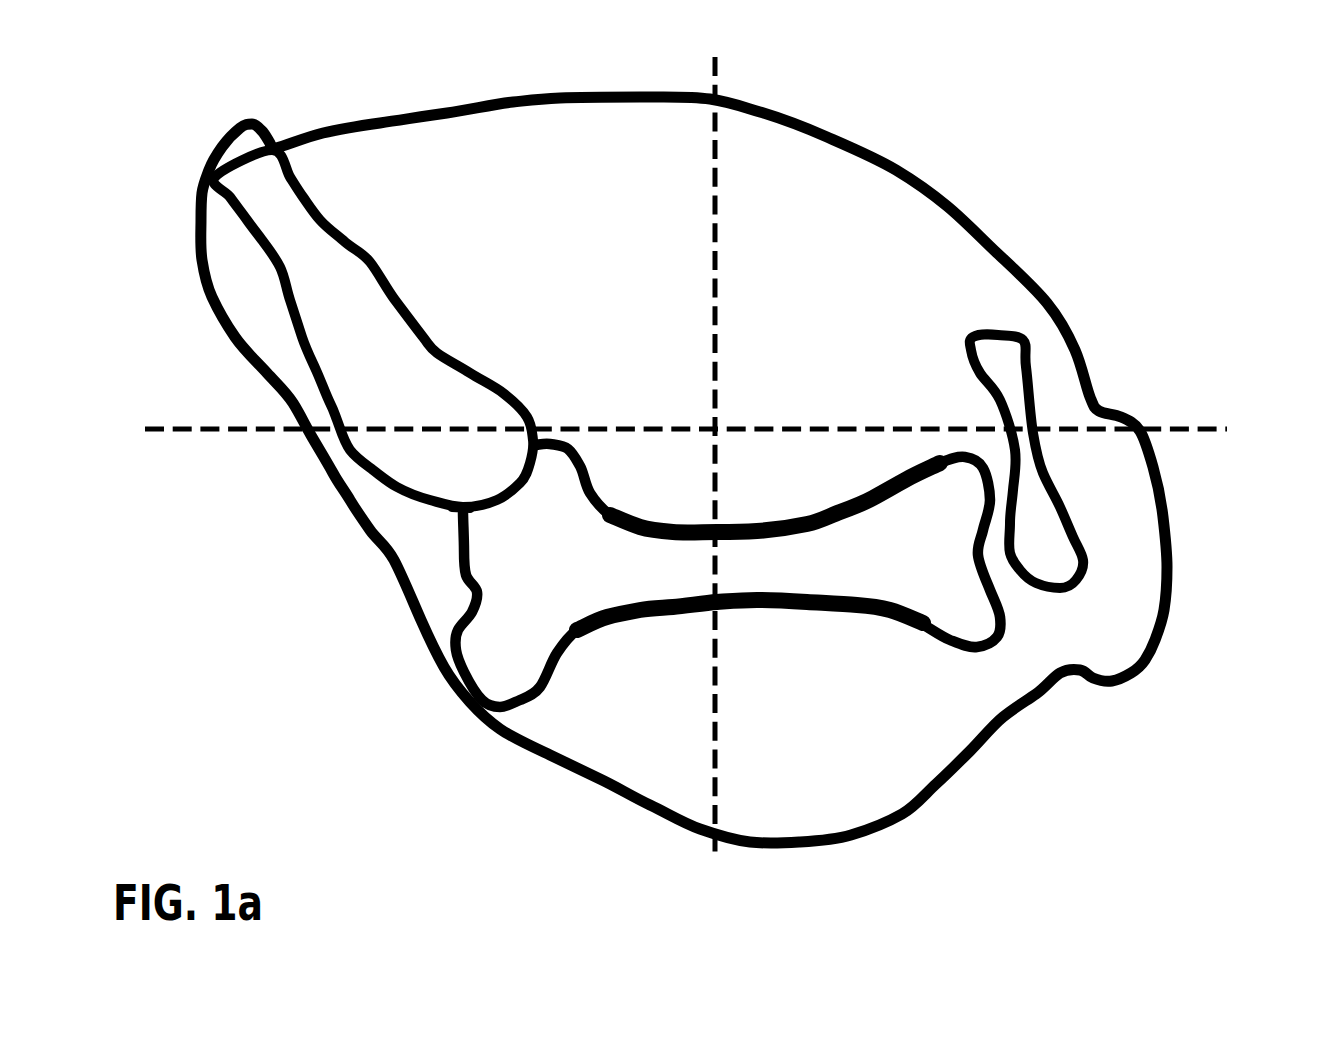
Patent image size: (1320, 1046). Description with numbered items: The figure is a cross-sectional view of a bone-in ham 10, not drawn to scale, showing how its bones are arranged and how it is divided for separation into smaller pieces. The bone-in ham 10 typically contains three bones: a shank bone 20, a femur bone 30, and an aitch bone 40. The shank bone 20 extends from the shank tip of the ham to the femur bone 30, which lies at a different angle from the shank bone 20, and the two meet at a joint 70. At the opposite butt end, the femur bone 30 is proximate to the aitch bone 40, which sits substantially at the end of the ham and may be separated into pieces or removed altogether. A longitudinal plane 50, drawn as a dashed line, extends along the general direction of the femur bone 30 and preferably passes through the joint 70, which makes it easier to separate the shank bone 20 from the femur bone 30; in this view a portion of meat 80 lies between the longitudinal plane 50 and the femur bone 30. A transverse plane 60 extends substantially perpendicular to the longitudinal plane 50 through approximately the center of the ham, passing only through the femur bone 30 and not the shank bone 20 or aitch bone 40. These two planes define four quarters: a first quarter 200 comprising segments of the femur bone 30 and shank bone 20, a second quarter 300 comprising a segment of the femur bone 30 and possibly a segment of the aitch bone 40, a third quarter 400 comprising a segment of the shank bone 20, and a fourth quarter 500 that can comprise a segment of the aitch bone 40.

The bone-in ham 10 is at (981, 807).
The shank bone 20 is at (377, 453).
The femur bone 30 is at (493, 628).
The aitch bone 40 is at (1053, 560).
The longitudinal plane 50 is at (1188, 428).
The transverse plane 60 is at (715, 73).
The joint 70 is at (460, 515).
The meat 80 is at (830, 477).
The first quarter 200 is at (667, 720).
The second quarter 300 is at (840, 720).
The third quarter 400 is at (607, 285).
The fourth quarter 500 is at (830, 271).